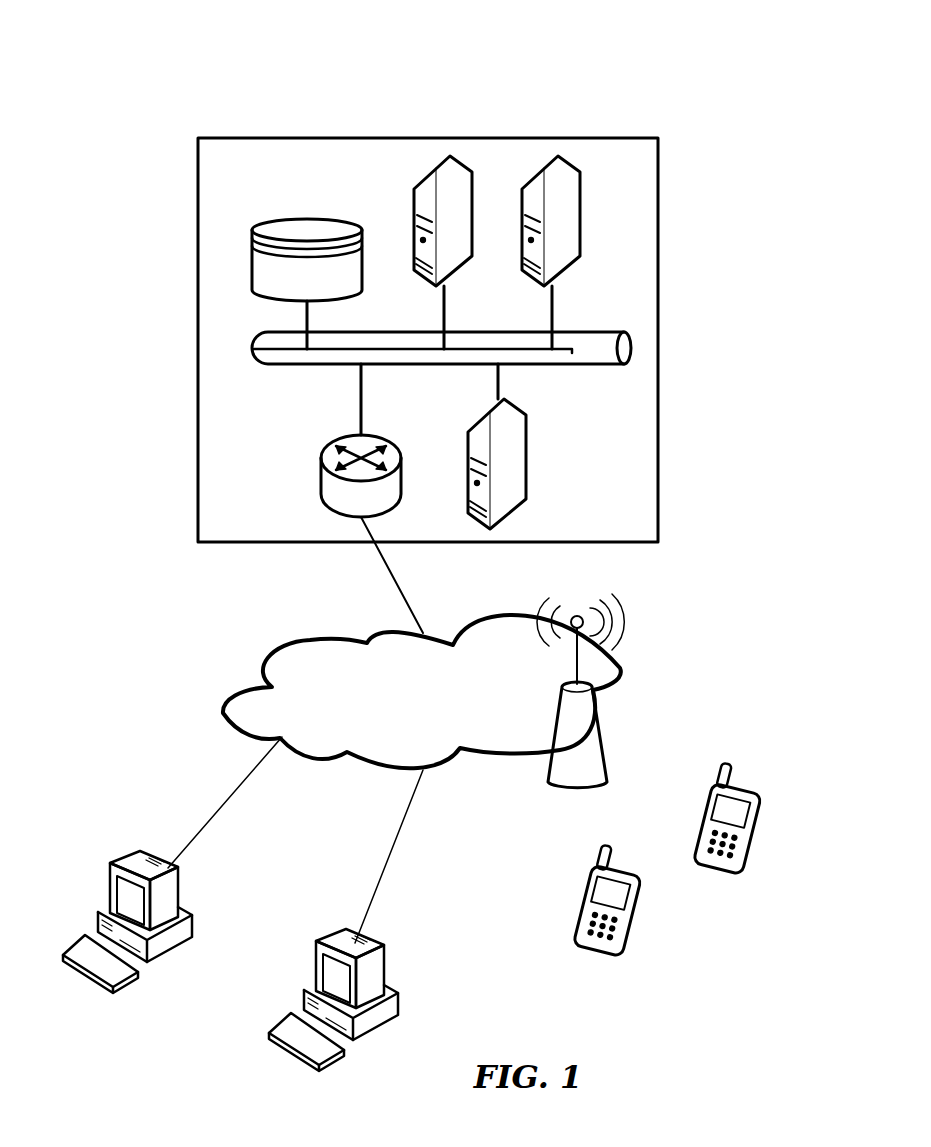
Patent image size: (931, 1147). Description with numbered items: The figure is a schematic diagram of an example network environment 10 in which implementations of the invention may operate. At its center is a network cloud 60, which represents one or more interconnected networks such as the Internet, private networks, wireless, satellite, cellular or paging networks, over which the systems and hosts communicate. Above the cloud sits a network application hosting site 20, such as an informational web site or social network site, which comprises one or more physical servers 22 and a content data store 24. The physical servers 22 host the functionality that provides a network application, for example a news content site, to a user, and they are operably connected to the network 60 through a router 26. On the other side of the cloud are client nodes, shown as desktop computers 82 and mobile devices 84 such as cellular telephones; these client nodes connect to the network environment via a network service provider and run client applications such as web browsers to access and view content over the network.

The system 10 is at (650, 105).
The network application hosting site 20 is at (198, 355).
The physical servers 22 is at (410, 222).
The content data store 24 is at (307, 218).
The router 26 is at (322, 477).
The network cloud 60 is at (225, 707).
The desktop computer 82 is at (118, 857).
The mobile devices 84 is at (650, 917).